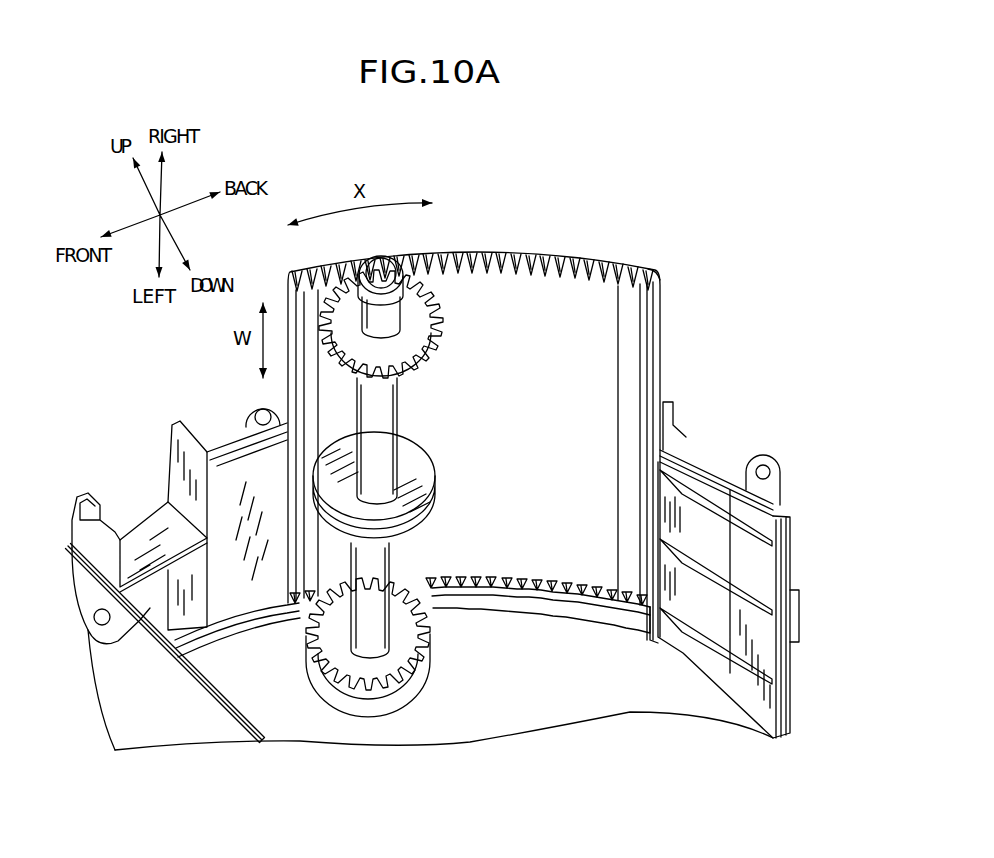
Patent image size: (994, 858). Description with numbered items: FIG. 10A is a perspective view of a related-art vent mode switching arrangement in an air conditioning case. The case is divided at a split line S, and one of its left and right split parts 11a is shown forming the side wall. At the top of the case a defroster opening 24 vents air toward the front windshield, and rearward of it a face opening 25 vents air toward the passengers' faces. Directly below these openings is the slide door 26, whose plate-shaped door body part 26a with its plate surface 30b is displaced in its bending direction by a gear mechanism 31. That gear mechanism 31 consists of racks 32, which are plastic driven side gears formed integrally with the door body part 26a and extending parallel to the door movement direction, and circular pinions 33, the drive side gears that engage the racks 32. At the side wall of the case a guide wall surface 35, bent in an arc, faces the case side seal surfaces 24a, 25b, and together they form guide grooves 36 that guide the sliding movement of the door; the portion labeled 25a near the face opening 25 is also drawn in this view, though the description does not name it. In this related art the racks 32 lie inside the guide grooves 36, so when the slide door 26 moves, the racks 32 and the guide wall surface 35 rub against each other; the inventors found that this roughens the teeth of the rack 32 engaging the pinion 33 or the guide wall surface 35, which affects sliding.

The split part 11a is at (728, 547).
The defroster opening 24 is at (133, 517).
The case side seal surface 24a is at (214, 650).
The face opening 25 is at (675, 432).
The guide rail 25a is at (650, 630).
The case side seal surface 25b is at (708, 440).
The slide door 26 is at (693, 235).
The door body part 26a is at (662, 270).
The plate surface 30b is at (575, 347).
The gear mechanism 31 is at (543, 170).
The rack 32 is at (518, 254).
The pinion 33 is at (436, 303).
The guide wall surface 35 is at (270, 628).
The guide groove 36 is at (312, 803).
The split line S is at (703, 470).